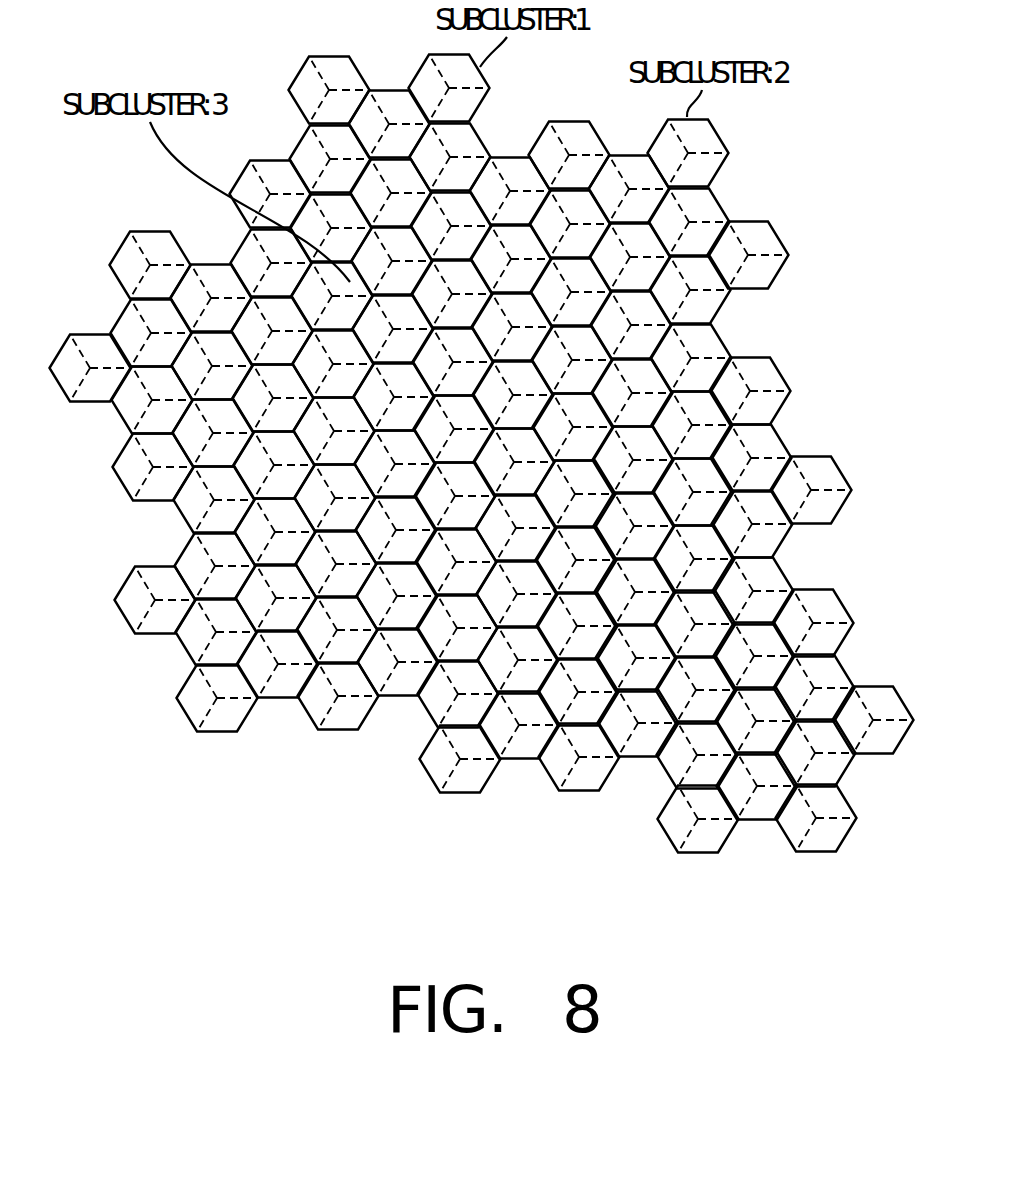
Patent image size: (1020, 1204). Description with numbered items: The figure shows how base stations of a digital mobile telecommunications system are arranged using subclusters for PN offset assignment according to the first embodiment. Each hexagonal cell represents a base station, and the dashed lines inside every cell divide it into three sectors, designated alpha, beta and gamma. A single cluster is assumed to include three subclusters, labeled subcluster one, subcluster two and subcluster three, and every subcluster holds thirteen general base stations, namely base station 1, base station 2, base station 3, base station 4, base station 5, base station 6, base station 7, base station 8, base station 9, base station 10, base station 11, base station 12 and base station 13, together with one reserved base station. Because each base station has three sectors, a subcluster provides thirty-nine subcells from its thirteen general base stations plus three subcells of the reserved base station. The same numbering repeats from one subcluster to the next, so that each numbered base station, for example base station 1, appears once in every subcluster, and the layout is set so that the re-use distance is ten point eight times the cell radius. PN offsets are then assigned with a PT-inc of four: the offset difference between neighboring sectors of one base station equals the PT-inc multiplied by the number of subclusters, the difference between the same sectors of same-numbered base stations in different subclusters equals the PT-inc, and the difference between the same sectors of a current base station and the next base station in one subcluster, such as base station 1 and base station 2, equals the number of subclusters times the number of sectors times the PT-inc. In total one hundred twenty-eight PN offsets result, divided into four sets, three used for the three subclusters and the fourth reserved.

The base station 1 is at (484, 457).
The base station 2 is at (483, 390).
The base station 3 is at (543, 423).
The base station 4 is at (544, 490).
The base station 5 is at (485, 524).
The base station 6 is at (425, 492).
The base station 7 is at (424, 425).
The base station 8 is at (423, 357).
The base station 9 is at (542, 356).
The base station 10 is at (603, 456).
The base station 11 is at (545, 556).
The base station 12 is at (426, 558).
The base station 13 is at (364, 459).